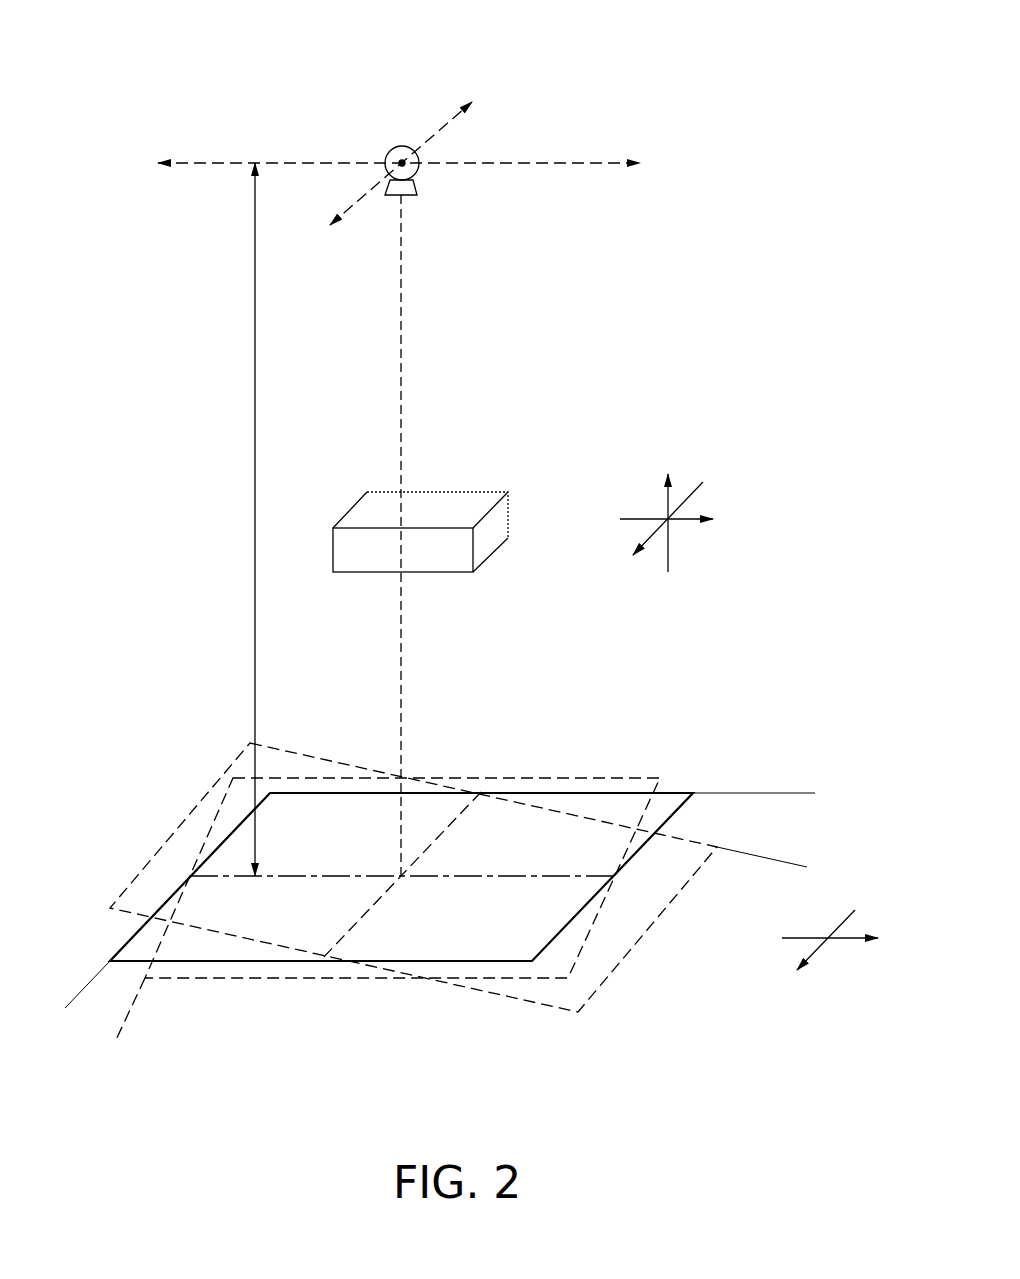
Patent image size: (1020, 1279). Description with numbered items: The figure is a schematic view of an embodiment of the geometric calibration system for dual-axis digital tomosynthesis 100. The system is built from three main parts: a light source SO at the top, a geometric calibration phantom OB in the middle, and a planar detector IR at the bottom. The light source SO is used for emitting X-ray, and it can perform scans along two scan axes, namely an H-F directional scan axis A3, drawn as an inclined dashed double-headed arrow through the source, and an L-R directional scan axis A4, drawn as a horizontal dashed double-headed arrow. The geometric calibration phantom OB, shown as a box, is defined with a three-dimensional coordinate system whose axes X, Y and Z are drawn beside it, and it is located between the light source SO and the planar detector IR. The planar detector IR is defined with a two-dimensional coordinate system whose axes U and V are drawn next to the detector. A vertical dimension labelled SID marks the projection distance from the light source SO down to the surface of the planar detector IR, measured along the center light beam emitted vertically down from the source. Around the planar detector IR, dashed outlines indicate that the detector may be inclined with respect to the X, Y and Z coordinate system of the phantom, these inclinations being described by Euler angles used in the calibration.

The geometric calibration system for dual-axis digital tomosynthesis 100 is at (131, 73).
The light source SO is at (396, 147).
The H-F directional scan axis A3 is at (443, 127).
The L-R directional scan axis A4 is at (573, 161).
The projection distance SID is at (226, 519).
The geometric calibration phantom OB is at (490, 554).
The planar detector IR is at (527, 922).
The X axis of 3D coordinate system X is at (657, 533).
The Y axis of 3D coordinate system Y is at (676, 518).
The Z axis of 3D coordinate system Z is at (666, 506).
The U axis of 2D coordinate system U is at (816, 956).
The V axis of 2D coordinate system V is at (844, 942).